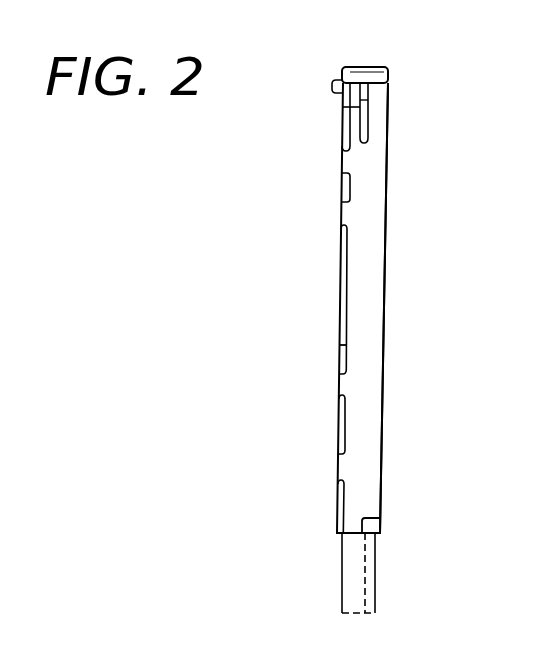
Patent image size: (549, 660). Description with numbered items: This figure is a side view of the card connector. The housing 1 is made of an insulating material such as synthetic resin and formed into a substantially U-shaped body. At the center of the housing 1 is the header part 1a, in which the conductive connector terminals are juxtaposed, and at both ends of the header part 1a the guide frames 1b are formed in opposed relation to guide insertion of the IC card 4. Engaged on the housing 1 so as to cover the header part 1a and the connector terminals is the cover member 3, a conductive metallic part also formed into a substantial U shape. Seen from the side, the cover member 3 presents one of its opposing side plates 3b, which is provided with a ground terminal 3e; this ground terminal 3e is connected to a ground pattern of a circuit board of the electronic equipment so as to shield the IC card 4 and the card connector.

The housing 1 is at (335, 113).
The header part 1a is at (368, 74).
The guide frame 1b is at (379, 523).
The cover member 3 is at (384, 435).
The side plate 3b is at (370, 280).
The ground terminal 3e is at (342, 162).
The IC card 4 is at (355, 564).